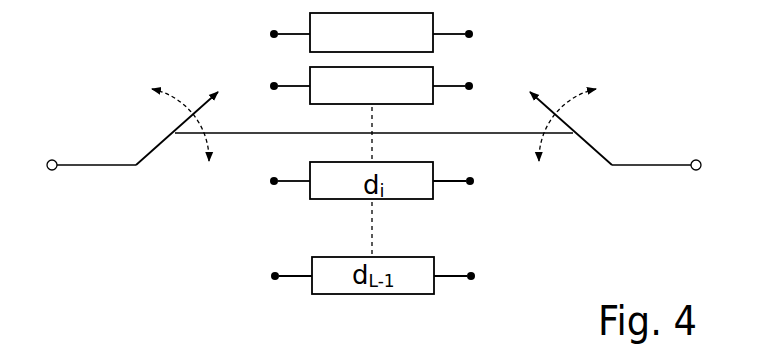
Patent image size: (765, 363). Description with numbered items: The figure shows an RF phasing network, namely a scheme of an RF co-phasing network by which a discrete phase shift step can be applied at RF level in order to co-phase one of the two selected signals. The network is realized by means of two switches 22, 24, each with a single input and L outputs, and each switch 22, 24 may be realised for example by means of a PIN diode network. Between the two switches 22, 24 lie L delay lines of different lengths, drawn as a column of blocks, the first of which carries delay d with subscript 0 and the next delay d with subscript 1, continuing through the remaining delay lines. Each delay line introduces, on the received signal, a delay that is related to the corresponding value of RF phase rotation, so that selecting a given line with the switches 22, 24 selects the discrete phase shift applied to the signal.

The switch 22 is at (163, 138).
The switch 24 is at (589, 142).
The delay element d0 0 is at (371, 33).
The delay element d1 1 is at (371, 86).